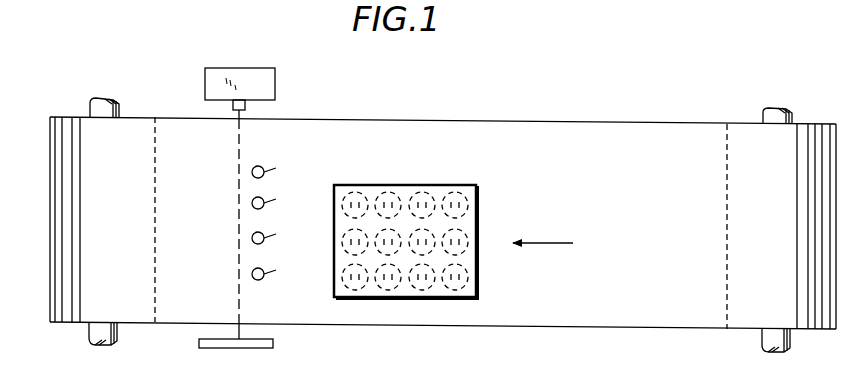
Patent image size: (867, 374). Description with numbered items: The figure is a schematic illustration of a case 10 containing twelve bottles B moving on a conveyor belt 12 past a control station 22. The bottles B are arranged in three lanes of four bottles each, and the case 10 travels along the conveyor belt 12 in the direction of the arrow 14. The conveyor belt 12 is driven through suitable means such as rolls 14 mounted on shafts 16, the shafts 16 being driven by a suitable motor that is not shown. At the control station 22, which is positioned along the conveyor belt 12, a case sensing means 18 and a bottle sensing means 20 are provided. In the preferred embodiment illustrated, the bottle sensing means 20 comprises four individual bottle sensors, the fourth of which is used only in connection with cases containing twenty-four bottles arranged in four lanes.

The case 10 is at (421, 229).
The conveyor belt 12 is at (540, 128).
The rolls 14 is at (132, 128).
The shafts 16 is at (117, 339).
The case sensing means 18 is at (251, 66).
The bottle sensing means 20 is at (264, 152).
The control station 22 is at (422, 85).
The bottles B is at (462, 208).